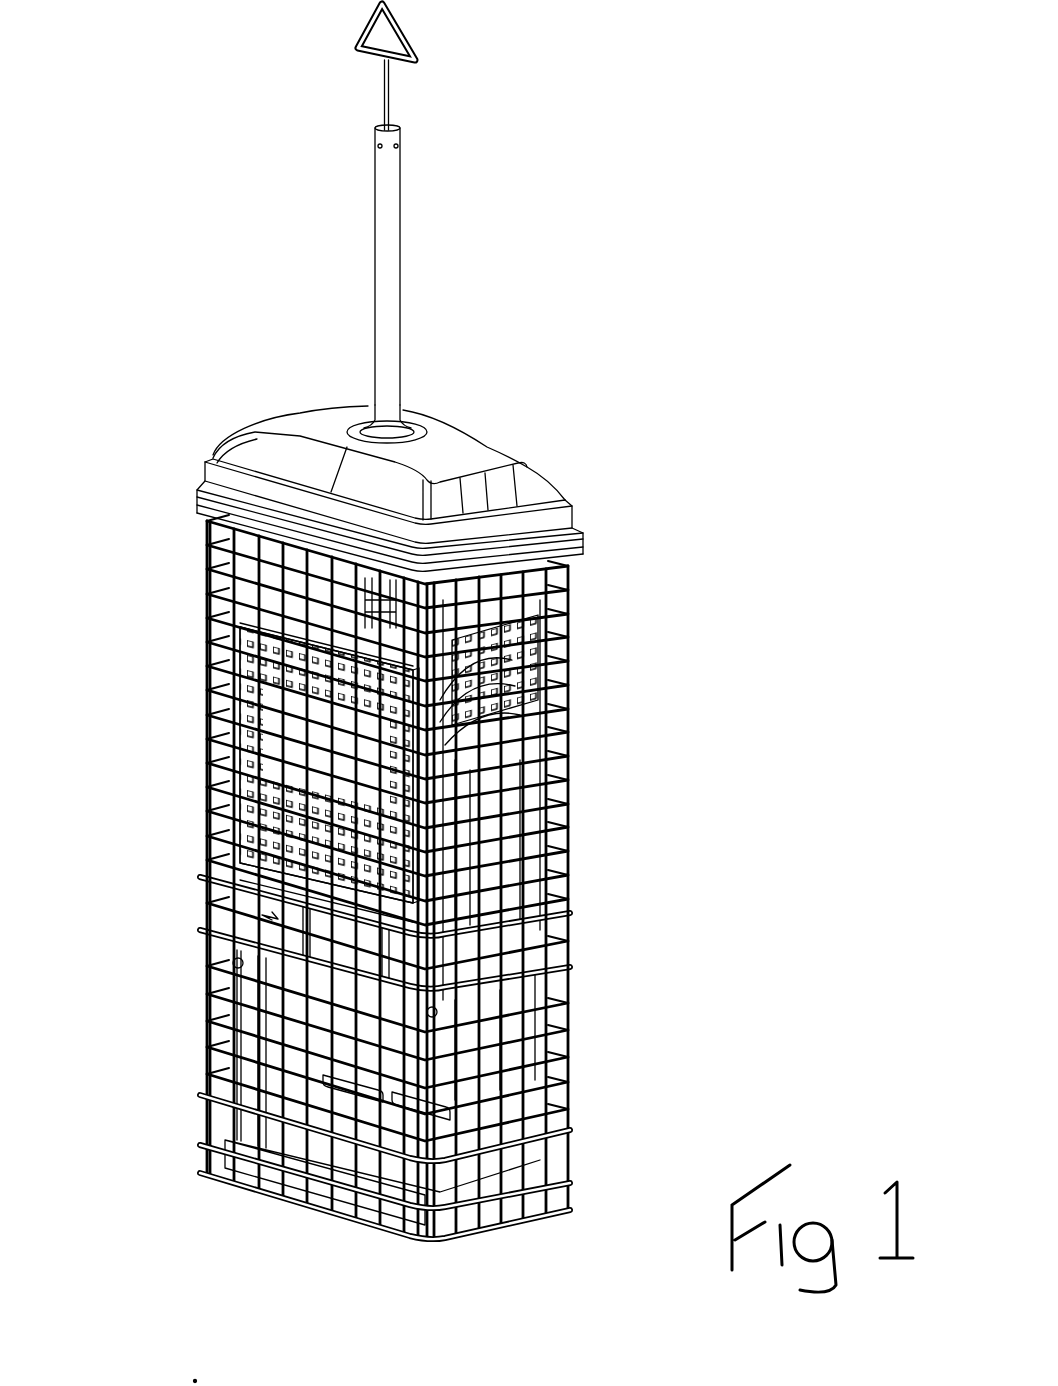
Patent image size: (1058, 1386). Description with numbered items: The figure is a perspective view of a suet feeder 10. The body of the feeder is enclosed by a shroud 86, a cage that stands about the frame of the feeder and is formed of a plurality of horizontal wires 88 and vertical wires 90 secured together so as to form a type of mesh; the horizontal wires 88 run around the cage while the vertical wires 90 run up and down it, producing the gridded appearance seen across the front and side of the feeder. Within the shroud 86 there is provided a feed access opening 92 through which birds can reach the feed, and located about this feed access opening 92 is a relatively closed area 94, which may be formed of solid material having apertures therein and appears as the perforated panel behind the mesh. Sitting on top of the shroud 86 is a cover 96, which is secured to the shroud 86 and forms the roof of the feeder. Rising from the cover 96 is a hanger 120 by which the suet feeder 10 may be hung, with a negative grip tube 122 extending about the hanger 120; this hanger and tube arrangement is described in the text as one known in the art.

The suet feeder 10 is at (692, 308).
The shroud 86 is at (596, 627).
The horizontal wires 88 is at (563, 1080).
The vertical wires 90 is at (350, 1152).
The feed access opening 92 is at (210, 922).
The relatively closed area 94 is at (215, 832).
The cover 96 is at (478, 457).
The hanger 120 is at (395, 100).
The negative grip tube 122 is at (393, 197).